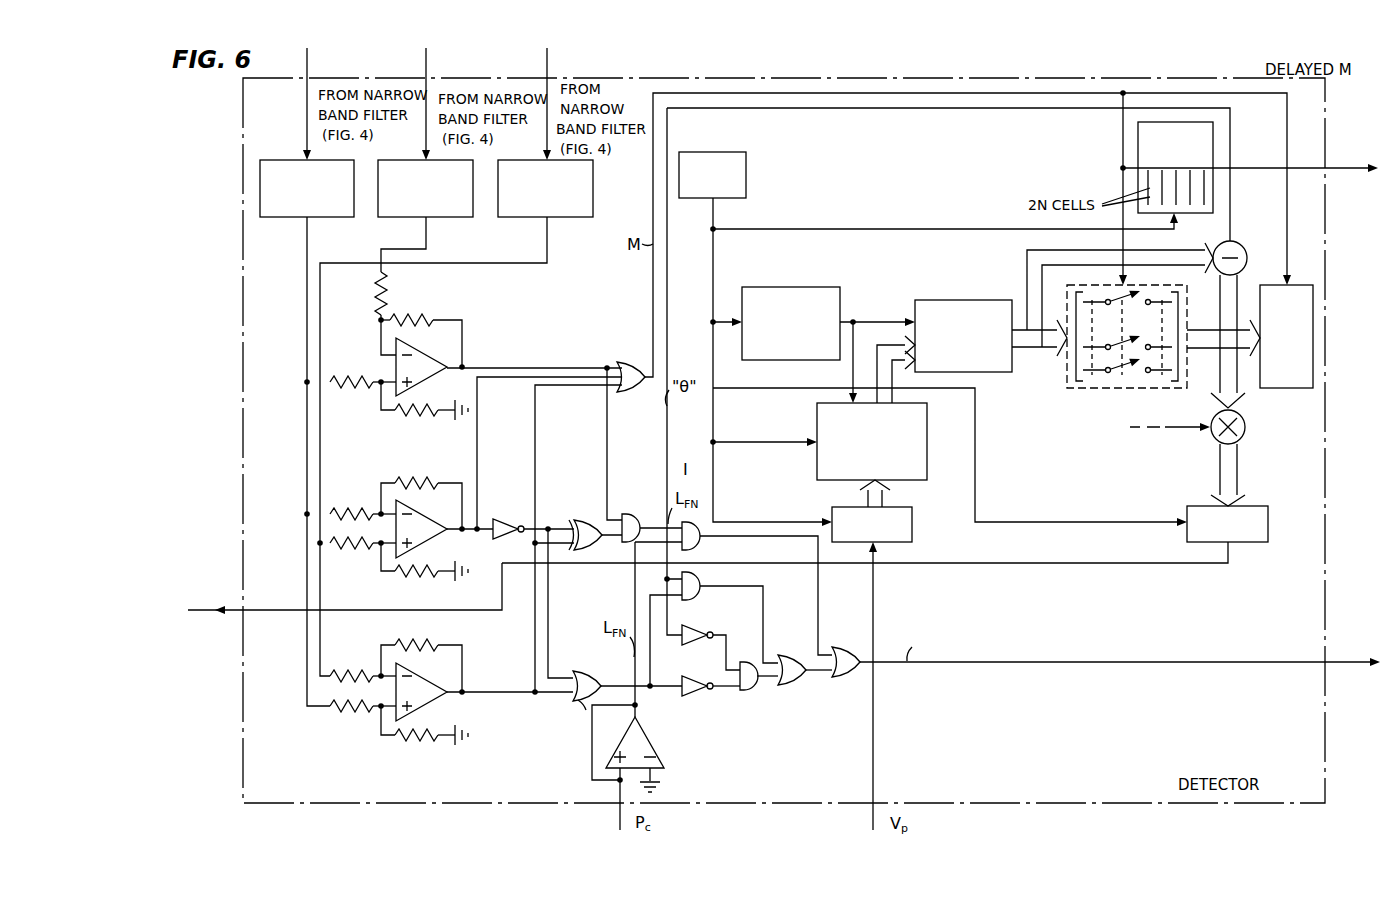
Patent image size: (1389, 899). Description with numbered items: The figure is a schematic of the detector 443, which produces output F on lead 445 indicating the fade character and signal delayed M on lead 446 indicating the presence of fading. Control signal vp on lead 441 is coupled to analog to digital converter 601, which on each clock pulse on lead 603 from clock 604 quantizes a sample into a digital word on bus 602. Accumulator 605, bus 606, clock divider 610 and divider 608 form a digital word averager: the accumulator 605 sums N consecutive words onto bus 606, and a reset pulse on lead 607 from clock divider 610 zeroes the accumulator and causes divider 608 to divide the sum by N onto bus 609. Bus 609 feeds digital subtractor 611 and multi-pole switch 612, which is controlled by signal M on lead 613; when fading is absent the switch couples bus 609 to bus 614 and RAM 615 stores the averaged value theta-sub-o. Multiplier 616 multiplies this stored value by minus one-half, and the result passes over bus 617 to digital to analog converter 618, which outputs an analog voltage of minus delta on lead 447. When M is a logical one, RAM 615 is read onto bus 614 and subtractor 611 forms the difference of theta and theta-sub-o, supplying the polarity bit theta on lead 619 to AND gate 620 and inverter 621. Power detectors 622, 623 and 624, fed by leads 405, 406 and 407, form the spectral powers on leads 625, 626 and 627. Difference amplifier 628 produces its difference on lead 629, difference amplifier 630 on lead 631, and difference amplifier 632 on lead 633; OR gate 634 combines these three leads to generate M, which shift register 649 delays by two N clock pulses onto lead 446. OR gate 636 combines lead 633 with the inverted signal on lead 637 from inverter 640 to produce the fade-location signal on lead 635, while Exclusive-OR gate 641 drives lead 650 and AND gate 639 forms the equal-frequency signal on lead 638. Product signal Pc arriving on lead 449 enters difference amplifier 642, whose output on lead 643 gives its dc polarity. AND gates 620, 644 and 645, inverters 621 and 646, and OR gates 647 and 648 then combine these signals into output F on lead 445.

The lead 405 is at (309, 62).
The lead 406 is at (428, 62).
The lead 407 is at (549, 62).
The detector 443 is at (770, 78).
The lead 446 is at (1330, 170).
The power detector 622 is at (289, 160).
The power detector 623 is at (379, 217).
The power detector 624 is at (593, 190).
The lead 625 is at (306, 253).
The lead 626 is at (426, 236).
The lead 627 is at (547, 236).
The clock 604 is at (702, 152).
The lead 603 is at (713, 208).
The shift register 649 is at (1133, 152).
The lead 619 is at (1213, 146).
The digital subtractor 611 is at (1232, 240).
The clock divider 610 is at (770, 287).
The lead 607 is at (853, 312).
The divider 608 is at (938, 300).
The lead 613 is at (653, 298).
The OR gate 634 is at (629, 364).
The lead 629 is at (523, 368).
The difference amplifier 628 is at (396, 355).
The lead 631 is at (477, 455).
The bus 606 is at (873, 382).
The bus 609 is at (1035, 355).
The bus 614 is at (1190, 352).
The RAM 615 is at (1287, 388).
The accumulator 605 is at (817, 417).
The multi-pole switch 612 is at (1115, 388).
The multiplier 616 is at (1245, 432).
The multiplier output bus 617 is at (1237, 470).
The digital to analog converter 618 is at (1188, 504).
The bus 602 is at (852, 501).
The analog to digital converter 601 is at (912, 538).
The difference amplifier 630 is at (447, 543).
The inverter 640 is at (506, 517).
The Exclusive-OR gate 641 is at (578, 517).
The AND gate 639 is at (624, 512).
The lead 638 is at (666, 498).
The AND gate 645 is at (700, 540).
The lead 650 is at (628, 563).
The lead 447 is at (200, 600).
The AND gate 620 is at (694, 598).
The inverter 621 is at (700, 643).
The OR gate 647 is at (781, 654).
The OR gate 648 is at (836, 645).
The lead 637 is at (570, 668).
The lead 635 is at (625, 684).
The OR gate 636 is at (569, 714).
The lead 643 is at (637, 707).
The inverter 646 is at (700, 698).
The AND gate 644 is at (752, 690).
The difference amplifier 632 is at (447, 705).
The lead 633 is at (497, 688).
The difference amplifier 642 is at (655, 740).
The Pc input 449 is at (616, 823).
The lead 441 is at (868, 823).
The lead 445 is at (1330, 670).